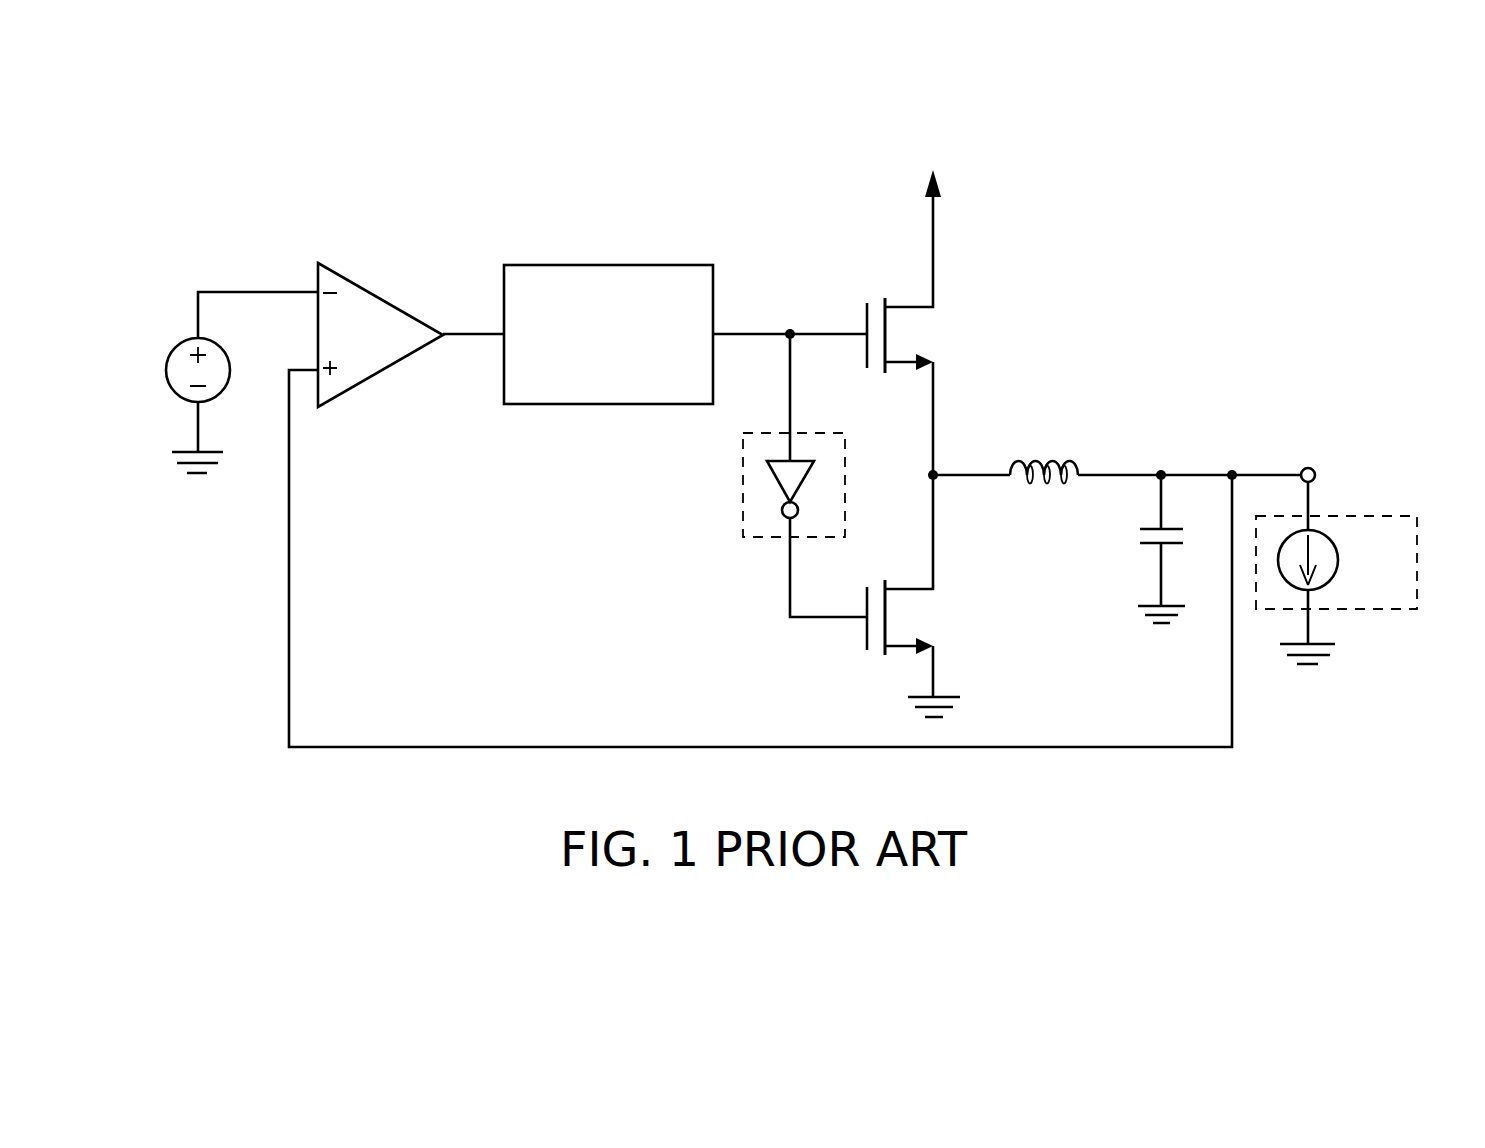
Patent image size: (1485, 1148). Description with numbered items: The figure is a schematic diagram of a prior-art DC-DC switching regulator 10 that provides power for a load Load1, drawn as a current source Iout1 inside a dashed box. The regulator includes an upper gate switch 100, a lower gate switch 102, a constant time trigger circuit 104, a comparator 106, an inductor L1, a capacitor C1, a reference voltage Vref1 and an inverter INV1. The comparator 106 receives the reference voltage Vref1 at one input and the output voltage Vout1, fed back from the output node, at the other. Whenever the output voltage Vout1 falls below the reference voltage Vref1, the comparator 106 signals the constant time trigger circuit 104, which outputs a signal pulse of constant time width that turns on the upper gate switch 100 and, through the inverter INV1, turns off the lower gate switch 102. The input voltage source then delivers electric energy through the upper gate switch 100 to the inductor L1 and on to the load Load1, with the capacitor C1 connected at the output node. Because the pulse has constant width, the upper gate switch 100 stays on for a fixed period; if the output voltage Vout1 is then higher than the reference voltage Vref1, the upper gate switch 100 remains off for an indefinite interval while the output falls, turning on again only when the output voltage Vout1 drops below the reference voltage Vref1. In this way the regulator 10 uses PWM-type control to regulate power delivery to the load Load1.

The DC-DC switching regulator 10 is at (1203, 240).
The upper gate switch 100 is at (933, 335).
The lower gate switch 102 is at (933, 608).
The constant time trigger circuit 104 is at (678, 265).
The comparator 106 is at (383, 293).
The inverter INV1 is at (822, 433).
The inductor L1 is at (1117, 457).
The capacitor C1 is at (1138, 536).
The load Load1 is at (1370, 516).
The output current source Iout1 is at (1341, 573).
The reference voltage Vref1 is at (208, 382).
The output voltage Vout1 is at (1283, 457).